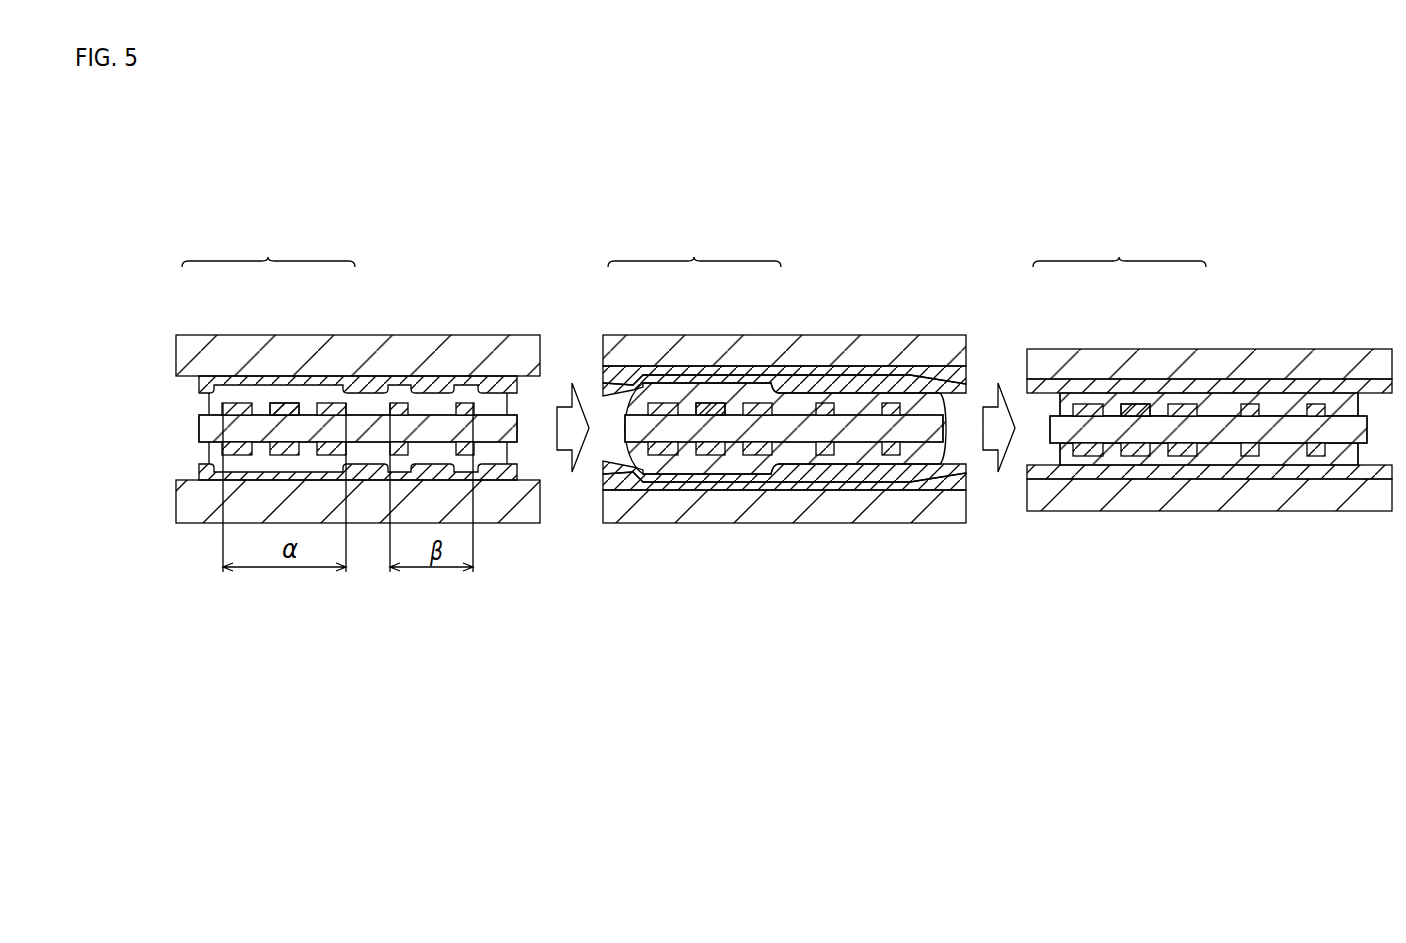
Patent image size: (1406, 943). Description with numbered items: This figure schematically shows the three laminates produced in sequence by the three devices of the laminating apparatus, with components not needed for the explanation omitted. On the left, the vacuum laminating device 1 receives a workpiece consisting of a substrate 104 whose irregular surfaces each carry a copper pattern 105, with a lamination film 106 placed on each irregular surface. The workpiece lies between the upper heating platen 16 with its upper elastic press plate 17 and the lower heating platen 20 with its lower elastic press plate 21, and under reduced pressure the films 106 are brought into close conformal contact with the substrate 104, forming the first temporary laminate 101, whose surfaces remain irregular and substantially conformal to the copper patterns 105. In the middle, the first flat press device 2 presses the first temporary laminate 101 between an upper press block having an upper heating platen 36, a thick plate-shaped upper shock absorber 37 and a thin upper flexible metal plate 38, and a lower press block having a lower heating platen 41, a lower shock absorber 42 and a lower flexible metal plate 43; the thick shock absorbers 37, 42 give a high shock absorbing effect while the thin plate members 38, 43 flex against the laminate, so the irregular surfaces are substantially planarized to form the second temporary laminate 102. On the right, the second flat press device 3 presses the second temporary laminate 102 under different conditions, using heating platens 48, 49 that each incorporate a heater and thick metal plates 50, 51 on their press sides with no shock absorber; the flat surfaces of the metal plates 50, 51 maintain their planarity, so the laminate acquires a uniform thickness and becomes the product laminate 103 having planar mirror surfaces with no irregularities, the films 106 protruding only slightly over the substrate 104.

The vacuum laminating device 1 is at (364, 413).
The first flat press device 2 is at (784, 398).
The second flat press device 3 is at (1209, 398).
The upper heating platen 16 is at (484, 352).
The upper elastic press plate 17 is at (372, 387).
The lower heating platen 20 is at (523, 505).
The lower elastic press plate 21 is at (493, 460).
The upper heating platen 36 is at (940, 352).
The upper shock absorber 37 is at (860, 374).
The upper flexible metal plate 38 is at (800, 382).
The lower heating platen 41 is at (935, 510).
The lower shock absorber 42 is at (867, 488).
The lower flexible metal plate 43 is at (802, 472).
The heating platen 48 is at (1341, 363).
The heating platen 49 is at (1313, 498).
The metal plate 50 is at (1265, 385).
The metal plate 51 is at (1228, 473).
The first temporary laminate 101 is at (349, 341).
The second temporary laminate 102 is at (775, 330).
The product laminate 103 is at (1200, 341).
The substrate 104 is at (258, 425).
The copper pattern 105 is at (232, 402).
The lamination film 106 is at (288, 393).